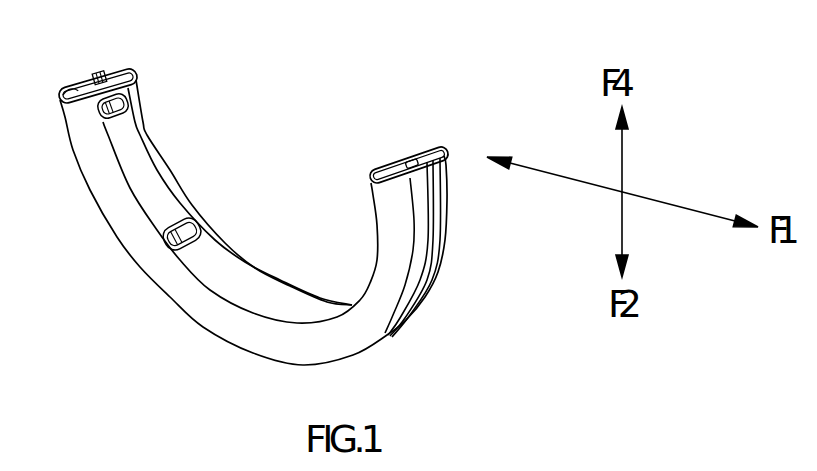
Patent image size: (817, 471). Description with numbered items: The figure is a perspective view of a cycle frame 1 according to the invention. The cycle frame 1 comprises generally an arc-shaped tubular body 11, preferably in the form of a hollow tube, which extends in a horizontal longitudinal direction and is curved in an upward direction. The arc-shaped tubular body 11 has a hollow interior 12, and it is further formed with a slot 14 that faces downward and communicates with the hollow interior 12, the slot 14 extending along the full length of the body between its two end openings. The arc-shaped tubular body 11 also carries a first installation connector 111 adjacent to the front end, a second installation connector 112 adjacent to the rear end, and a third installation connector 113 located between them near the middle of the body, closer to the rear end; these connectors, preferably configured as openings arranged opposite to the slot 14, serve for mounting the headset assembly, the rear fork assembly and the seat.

The cycle frame 1 is at (472, 90).
The arc-shaped tubular body 11 is at (258, 238).
The hollow interior 12 is at (407, 163).
The first installation connector 111 is at (417, 177).
The slot 14 is at (423, 300).
The second installation connector 112 is at (127, 99).
The third installation connector 113 is at (190, 222).